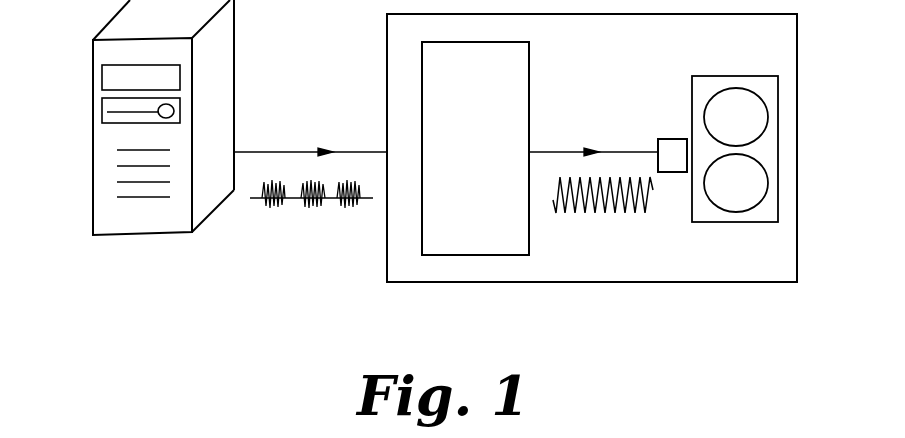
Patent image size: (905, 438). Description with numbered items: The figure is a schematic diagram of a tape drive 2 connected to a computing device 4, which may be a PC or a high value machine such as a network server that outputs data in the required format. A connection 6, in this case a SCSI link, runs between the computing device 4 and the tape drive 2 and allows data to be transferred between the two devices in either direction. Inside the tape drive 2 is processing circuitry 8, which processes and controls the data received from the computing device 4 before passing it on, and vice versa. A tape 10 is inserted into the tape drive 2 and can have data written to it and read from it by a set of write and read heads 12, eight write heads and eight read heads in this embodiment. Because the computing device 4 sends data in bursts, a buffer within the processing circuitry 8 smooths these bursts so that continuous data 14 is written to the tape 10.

The tape drive 2 is at (797, 108).
The computing device 4 is at (93, 62).
The connection 6 is at (288, 152).
The processing circuitry 8 is at (487, 147).
The tape 10 is at (343, 218).
The set of write and read heads 12 is at (668, 140).
The continuous data 14 is at (598, 222).